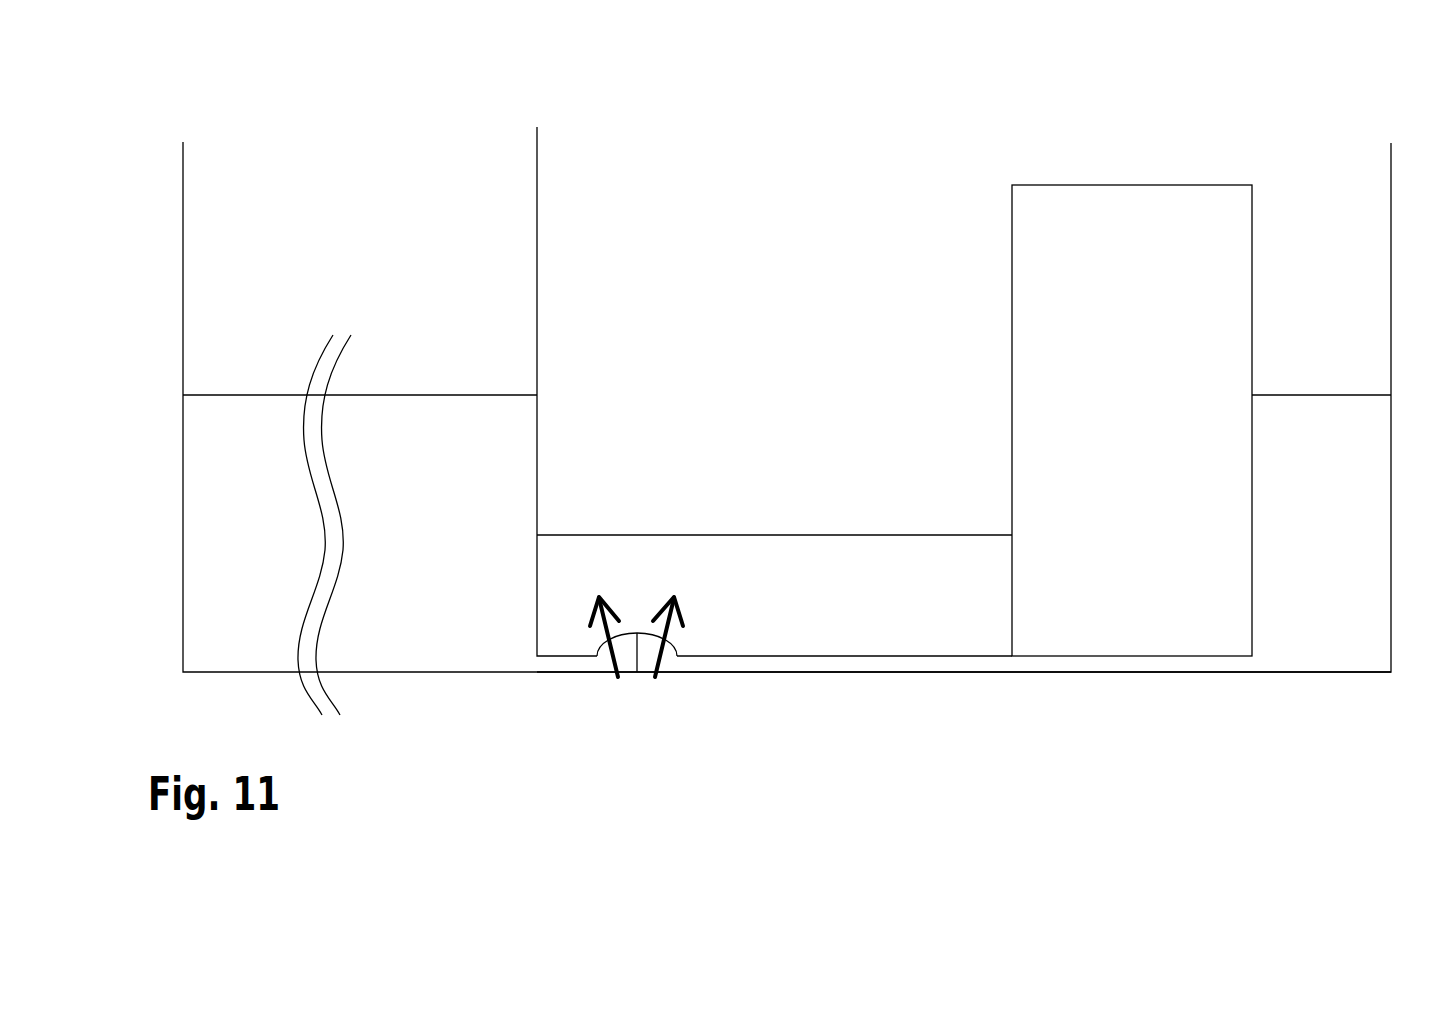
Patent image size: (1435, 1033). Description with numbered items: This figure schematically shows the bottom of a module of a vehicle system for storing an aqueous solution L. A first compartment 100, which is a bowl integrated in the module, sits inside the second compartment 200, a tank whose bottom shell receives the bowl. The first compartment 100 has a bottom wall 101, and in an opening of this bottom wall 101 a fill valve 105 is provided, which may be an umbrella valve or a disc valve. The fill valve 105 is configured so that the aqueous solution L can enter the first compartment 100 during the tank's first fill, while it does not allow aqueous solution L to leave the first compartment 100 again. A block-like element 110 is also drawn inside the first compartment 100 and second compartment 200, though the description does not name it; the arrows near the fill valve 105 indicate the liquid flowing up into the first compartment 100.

The second compartment 200 is at (182, 165).
The first compartment 100 is at (514, 206).
The block / insert 110 is at (1207, 185).
The fill valve 105 is at (643, 660).
The bottom wall 101 is at (805, 660).
The aqueous solution L is at (445, 445).